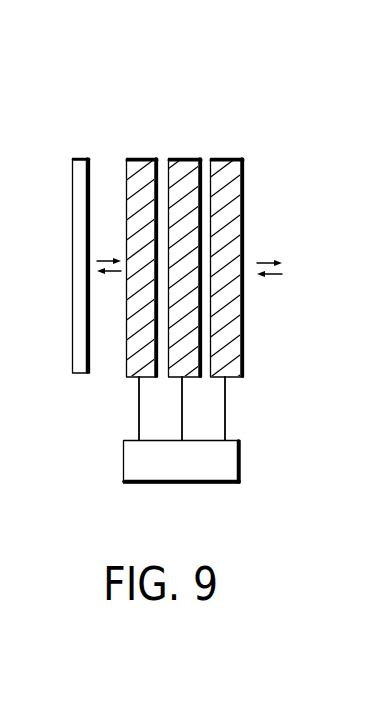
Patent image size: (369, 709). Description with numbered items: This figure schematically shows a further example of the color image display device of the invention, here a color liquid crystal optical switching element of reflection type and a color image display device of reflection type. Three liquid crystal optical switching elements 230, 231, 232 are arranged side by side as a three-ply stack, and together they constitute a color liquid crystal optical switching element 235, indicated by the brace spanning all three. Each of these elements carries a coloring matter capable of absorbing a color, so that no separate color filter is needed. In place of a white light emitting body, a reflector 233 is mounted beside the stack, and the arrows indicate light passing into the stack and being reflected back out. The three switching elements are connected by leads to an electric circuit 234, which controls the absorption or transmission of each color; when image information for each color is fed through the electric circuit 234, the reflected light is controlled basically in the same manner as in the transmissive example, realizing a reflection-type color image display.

The liquid crystal optical switching element 230 is at (138, 157).
The liquid crystal optical switching element 231 is at (183, 157).
The liquid crystal optical switching element 232 is at (233, 157).
The reflector 233 is at (72, 253).
The electric circuit 234 is at (240, 466).
The color liquid crystal optical switching element 235 is at (302, 80).